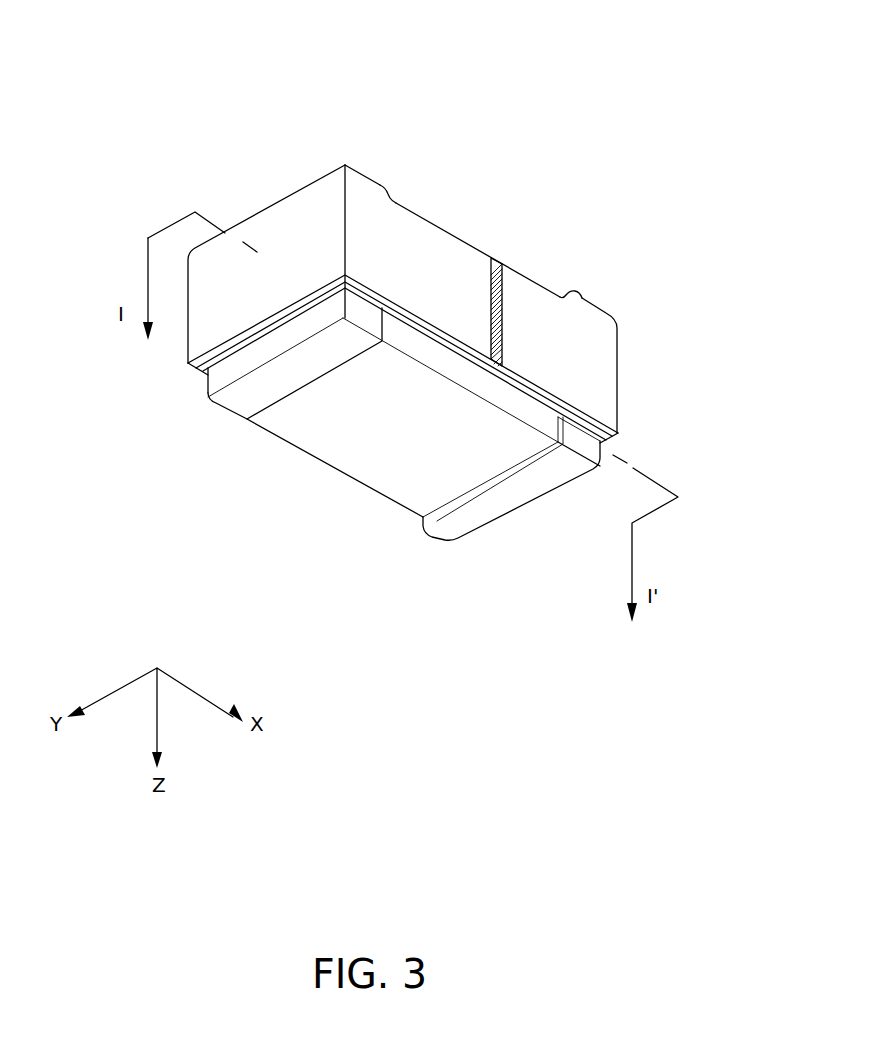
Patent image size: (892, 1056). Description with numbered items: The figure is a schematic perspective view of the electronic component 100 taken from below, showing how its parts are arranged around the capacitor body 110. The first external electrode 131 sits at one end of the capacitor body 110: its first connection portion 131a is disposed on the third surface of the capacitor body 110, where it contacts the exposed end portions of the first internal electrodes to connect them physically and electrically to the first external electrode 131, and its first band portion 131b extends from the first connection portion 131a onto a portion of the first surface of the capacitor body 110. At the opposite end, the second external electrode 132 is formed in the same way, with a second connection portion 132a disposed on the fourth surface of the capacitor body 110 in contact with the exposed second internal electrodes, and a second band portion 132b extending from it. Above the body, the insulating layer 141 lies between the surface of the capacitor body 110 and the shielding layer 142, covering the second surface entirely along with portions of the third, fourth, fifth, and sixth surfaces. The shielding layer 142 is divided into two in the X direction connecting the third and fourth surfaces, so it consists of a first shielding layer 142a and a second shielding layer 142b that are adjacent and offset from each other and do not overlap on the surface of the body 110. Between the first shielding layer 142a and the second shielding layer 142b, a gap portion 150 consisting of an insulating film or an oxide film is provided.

The electronic component 100 is at (213, 104).
The capacitor body 110 is at (352, 452).
The first external electrode 131 is at (244, 404).
The first connection portion 131a is at (224, 371).
The first band portion 131b is at (230, 398).
The second external electrode 132 is at (493, 520).
The second connection portion 132a is at (510, 519).
The second band portion 132b is at (513, 584).
The insulating layer 141 is at (210, 377).
The shielding layer 142 is at (403, 278).
The first shielding layer 142a is at (373, 191).
The second shielding layer 142b is at (582, 269).
The gap portion 150 is at (502, 340).